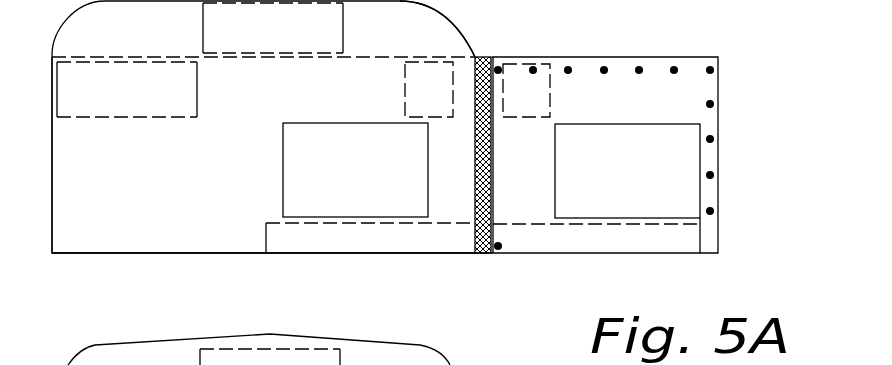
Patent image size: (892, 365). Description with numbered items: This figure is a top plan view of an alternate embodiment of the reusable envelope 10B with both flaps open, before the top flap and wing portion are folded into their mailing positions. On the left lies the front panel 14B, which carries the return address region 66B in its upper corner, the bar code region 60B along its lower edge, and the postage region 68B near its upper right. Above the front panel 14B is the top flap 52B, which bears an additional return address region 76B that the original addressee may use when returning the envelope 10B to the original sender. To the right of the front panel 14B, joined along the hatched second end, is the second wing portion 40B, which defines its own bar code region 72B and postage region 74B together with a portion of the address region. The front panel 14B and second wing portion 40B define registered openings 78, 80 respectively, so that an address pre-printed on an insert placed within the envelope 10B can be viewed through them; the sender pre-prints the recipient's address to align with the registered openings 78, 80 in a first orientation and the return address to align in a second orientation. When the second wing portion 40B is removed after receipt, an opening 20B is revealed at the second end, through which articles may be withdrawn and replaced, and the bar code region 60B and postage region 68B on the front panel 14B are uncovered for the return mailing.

The reusable envelope 10B is at (716, 25).
The front panel 14B is at (123, 183).
The opening 20B is at (482, 244).
The second wing portion 40B is at (647, 106).
The top flap 52B is at (420, 46).
The bar code region 60B is at (350, 250).
The return address region 66B is at (110, 104).
The postage region 68B is at (446, 105).
The bar code region 72B is at (618, 252).
The postage region 74B is at (547, 106).
The additional return address region 76B is at (284, 46).
The registered opening 78 is at (283, 141).
The registered opening 80 is at (699, 186).